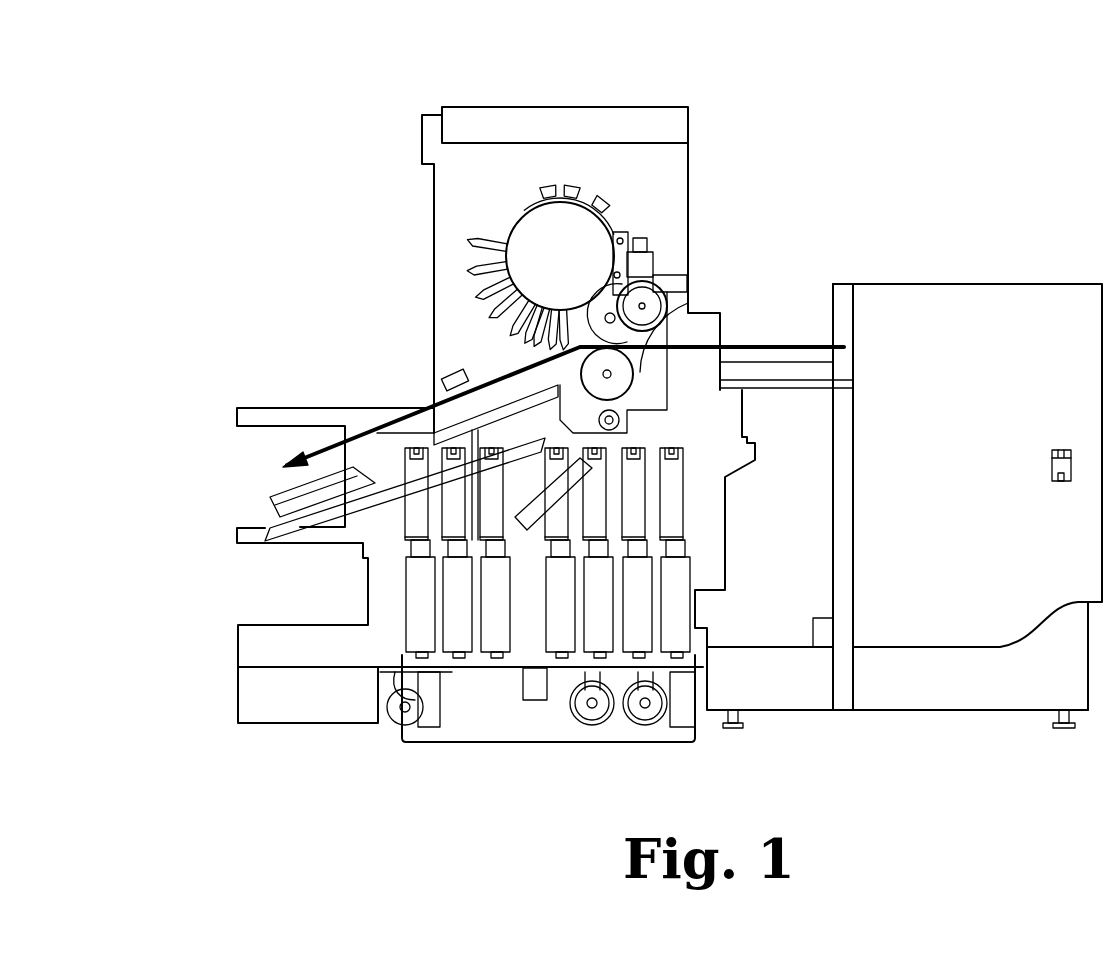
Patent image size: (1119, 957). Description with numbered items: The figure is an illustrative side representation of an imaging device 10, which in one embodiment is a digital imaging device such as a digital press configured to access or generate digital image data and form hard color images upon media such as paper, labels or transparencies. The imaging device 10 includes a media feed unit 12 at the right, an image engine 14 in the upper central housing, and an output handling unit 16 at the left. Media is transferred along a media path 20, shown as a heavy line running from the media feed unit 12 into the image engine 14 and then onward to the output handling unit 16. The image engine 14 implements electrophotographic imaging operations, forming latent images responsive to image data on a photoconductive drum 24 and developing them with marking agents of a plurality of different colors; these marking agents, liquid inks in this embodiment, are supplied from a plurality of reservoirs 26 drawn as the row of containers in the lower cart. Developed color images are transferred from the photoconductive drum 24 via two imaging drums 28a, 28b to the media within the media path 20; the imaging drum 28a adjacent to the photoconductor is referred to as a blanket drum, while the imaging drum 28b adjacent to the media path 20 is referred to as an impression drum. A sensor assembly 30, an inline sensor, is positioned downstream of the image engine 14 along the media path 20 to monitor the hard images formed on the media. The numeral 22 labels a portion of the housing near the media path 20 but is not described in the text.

The imaging device 10 is at (815, 152).
The media feed unit 12 is at (920, 284).
The image engine 14 is at (612, 192).
The output handling unit 16 is at (250, 466).
The media path 20 is at (760, 344).
The housing 22 is at (690, 380).
The photoconductive drum 24 is at (605, 228).
The reservoirs 26 is at (545, 742).
The imaging drum (blanket drum) 28a is at (670, 362).
The imaging drum (impression drum) 28b is at (673, 357).
The sensor assembly 30 is at (443, 373).